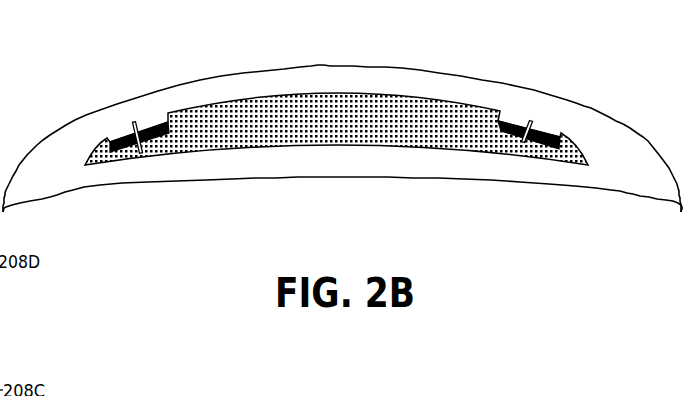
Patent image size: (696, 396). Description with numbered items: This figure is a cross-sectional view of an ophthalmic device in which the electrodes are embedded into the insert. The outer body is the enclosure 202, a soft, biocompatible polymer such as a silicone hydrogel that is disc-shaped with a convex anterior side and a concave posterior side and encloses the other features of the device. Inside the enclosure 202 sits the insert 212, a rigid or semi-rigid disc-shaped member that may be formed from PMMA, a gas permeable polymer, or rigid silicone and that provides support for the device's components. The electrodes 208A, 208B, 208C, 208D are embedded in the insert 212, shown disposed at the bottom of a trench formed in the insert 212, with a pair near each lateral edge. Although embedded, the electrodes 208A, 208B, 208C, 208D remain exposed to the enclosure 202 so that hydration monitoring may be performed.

The enclosure 202 is at (442, 72).
The insert 212 is at (262, 97).
The electrode 208A is at (125, 153).
The electrode 208B is at (157, 152).
The electrode 208C is at (541, 152).
The electrode 208D is at (509, 152).